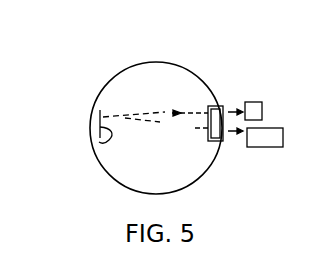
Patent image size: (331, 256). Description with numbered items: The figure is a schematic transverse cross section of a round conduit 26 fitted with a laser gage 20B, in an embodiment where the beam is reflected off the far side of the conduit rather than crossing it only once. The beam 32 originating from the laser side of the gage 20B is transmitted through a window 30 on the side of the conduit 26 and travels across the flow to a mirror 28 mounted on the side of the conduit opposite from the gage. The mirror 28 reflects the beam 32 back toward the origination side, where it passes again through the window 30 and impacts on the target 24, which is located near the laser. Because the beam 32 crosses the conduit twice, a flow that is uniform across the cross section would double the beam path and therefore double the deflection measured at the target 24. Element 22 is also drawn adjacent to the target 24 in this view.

The gage 20B is at (123, 45).
The conduit 26 is at (173, 63).
The mirror 28 is at (104, 141).
The beam 32 is at (163, 122).
The window 30 is at (225, 123).
The target 24 is at (256, 102).
The sample 22 is at (260, 147).